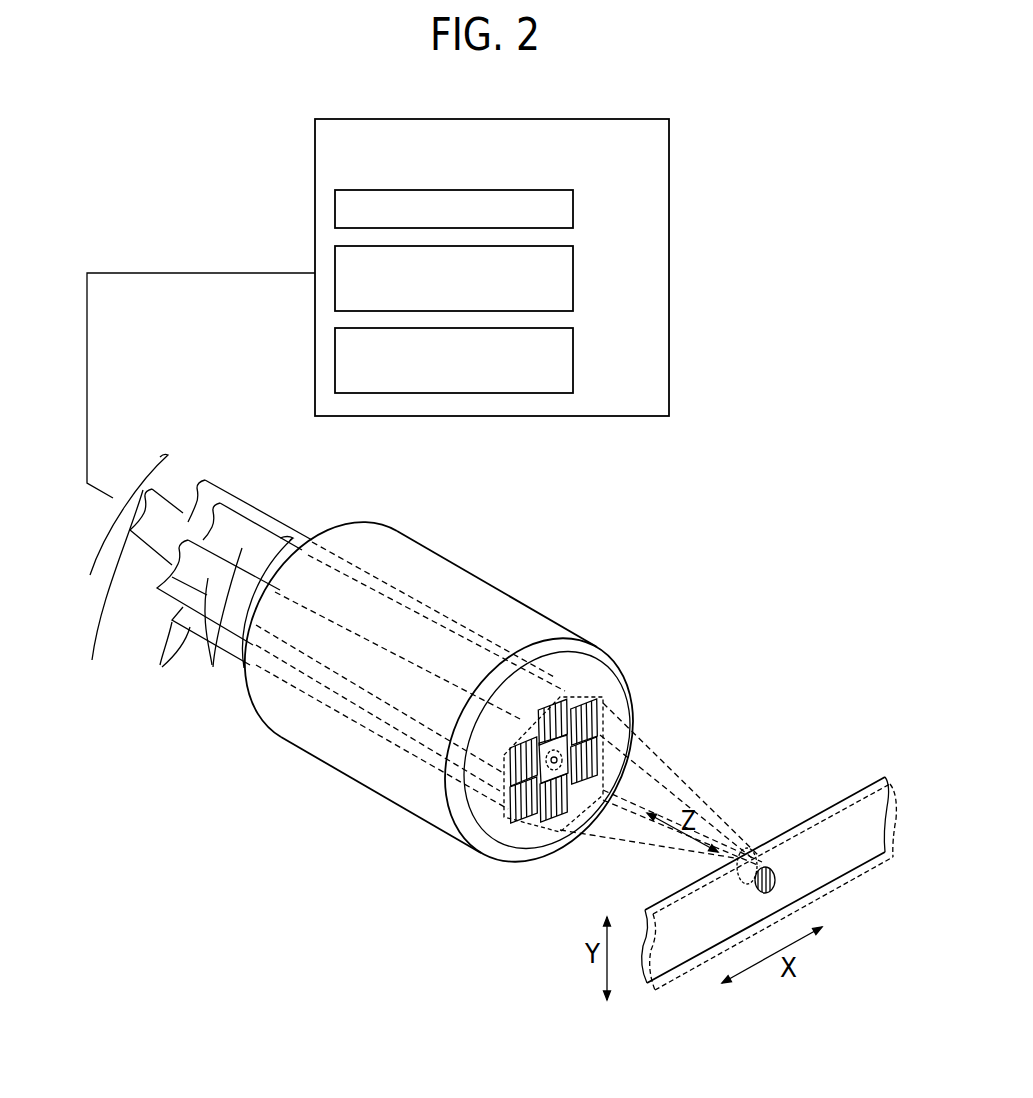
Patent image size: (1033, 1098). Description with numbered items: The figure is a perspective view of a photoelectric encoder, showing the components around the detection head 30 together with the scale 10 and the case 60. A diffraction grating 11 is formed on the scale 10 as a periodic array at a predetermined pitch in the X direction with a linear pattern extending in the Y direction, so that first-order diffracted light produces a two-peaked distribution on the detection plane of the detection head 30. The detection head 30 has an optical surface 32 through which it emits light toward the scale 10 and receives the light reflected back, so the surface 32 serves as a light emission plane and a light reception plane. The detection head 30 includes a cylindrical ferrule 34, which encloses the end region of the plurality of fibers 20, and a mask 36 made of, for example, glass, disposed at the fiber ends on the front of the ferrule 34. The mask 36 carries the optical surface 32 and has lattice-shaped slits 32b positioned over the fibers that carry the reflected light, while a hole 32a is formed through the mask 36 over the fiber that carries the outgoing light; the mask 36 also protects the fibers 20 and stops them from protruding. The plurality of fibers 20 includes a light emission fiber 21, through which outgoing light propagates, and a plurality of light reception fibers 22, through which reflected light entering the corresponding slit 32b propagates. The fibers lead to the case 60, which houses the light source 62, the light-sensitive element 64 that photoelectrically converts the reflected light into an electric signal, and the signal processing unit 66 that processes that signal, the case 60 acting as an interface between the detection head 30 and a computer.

The scale 10 is at (769, 847).
The diffraction grating 11 is at (777, 880).
The plurality of fibers 20 is at (189, 600).
The light emission fiber 21 is at (121, 576).
The light reception fibers 22 is at (223, 697).
The detection head 30 is at (507, 697).
The optical surface 32 is at (594, 738).
The hole 32a is at (570, 748).
The lattice-shaped slits 32b is at (597, 703).
The cylindrical ferrule 34 is at (458, 587).
The mask 36 is at (563, 653).
The case 60 is at (669, 136).
The light source 62 is at (573, 203).
The light-sensitive element 64 is at (573, 265).
The signal processing unit 66 is at (573, 349).